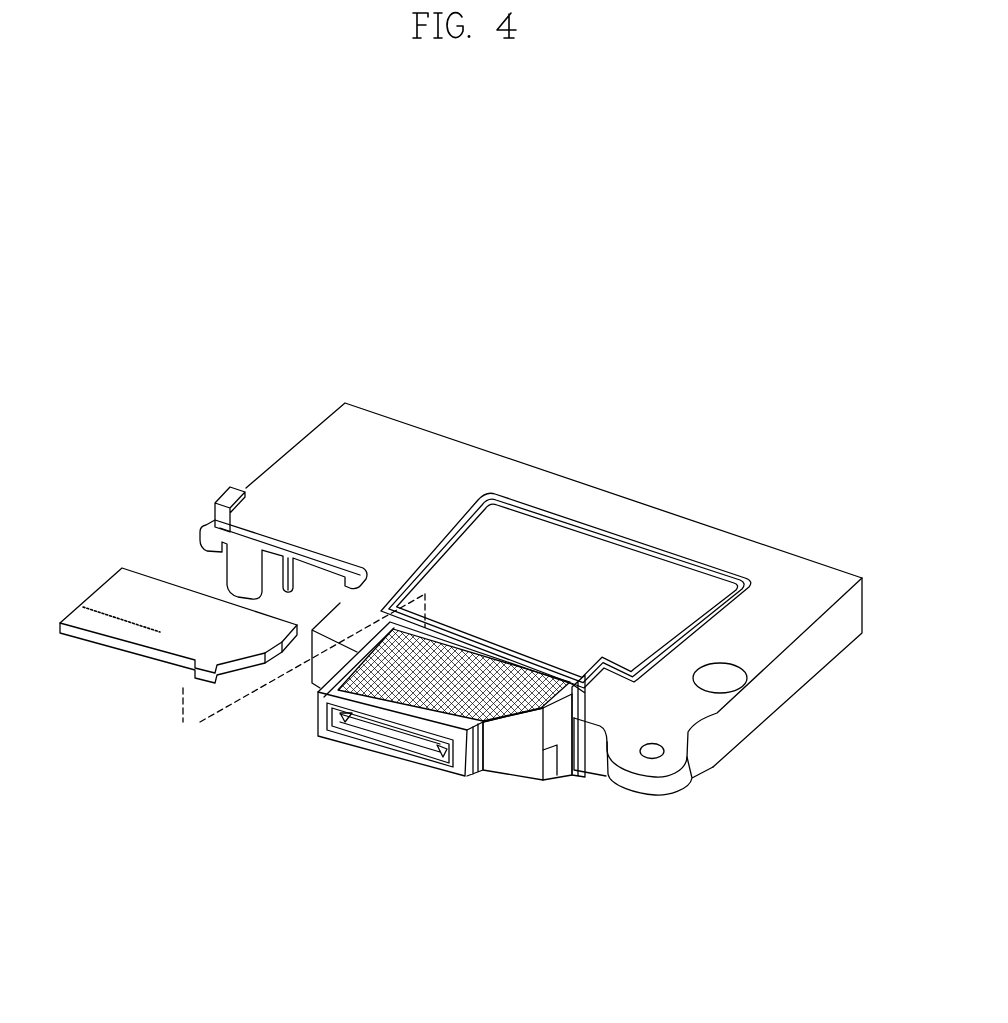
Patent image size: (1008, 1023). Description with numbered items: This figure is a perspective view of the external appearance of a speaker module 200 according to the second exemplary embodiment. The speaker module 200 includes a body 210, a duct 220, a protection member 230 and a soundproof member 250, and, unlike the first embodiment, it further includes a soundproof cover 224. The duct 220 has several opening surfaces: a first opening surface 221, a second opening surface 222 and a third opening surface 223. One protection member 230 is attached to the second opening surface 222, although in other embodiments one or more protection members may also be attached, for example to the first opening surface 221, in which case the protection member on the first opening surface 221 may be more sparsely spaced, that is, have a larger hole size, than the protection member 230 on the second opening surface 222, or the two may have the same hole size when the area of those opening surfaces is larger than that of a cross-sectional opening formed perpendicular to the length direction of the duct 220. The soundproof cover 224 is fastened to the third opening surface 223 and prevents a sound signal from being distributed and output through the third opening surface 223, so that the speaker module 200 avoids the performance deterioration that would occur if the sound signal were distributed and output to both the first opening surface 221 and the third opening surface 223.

The speaker module 200 is at (688, 418).
The body 210 is at (790, 565).
The duct 220 is at (497, 748).
The first opening surface 221 is at (440, 745).
The second opening surface 222 is at (343, 682).
The third opening surface 223 is at (410, 705).
The soundproof cover 224 is at (132, 632).
The protection member 230 is at (563, 782).
The soundproof member 250 is at (453, 753).